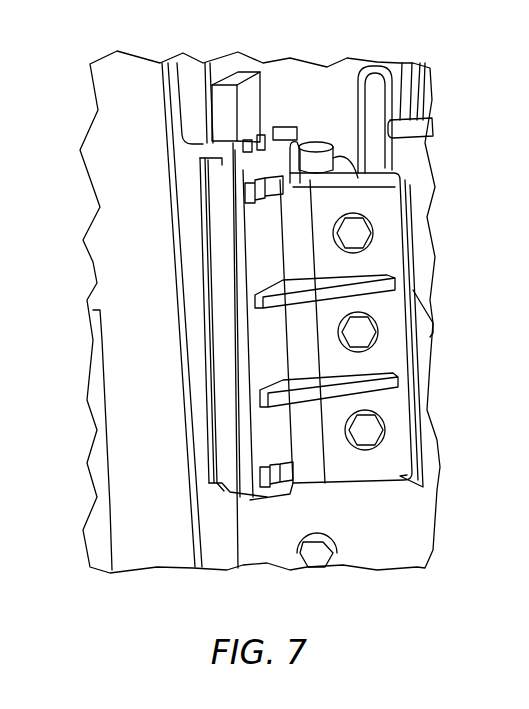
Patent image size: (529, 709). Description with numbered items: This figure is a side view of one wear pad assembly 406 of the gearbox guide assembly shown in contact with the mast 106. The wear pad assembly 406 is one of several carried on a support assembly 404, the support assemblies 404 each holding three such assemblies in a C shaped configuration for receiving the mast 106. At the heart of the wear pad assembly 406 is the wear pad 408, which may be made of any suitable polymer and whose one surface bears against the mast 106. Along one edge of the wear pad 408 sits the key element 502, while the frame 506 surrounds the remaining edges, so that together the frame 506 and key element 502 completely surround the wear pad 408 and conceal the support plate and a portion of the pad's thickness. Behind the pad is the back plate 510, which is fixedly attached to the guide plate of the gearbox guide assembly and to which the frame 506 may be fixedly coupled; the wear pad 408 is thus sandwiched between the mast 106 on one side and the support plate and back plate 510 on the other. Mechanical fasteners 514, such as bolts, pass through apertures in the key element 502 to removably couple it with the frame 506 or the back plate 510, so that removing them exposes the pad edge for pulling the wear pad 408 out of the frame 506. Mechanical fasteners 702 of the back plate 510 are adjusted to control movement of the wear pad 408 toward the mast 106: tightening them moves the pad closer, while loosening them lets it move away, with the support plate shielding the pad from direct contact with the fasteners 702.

The mast 106 is at (200, 357).
The back plate 510 is at (232, 140).
The wear pad 408 is at (208, 250).
The key element 502 is at (235, 141).
The frame 506 is at (233, 398).
The wear pad assembly 406 is at (226, 503).
The support assembly 404 is at (380, 265).
The mechanical fasteners 702 is at (268, 187).
The mechanical fasteners 514 is at (297, 135).